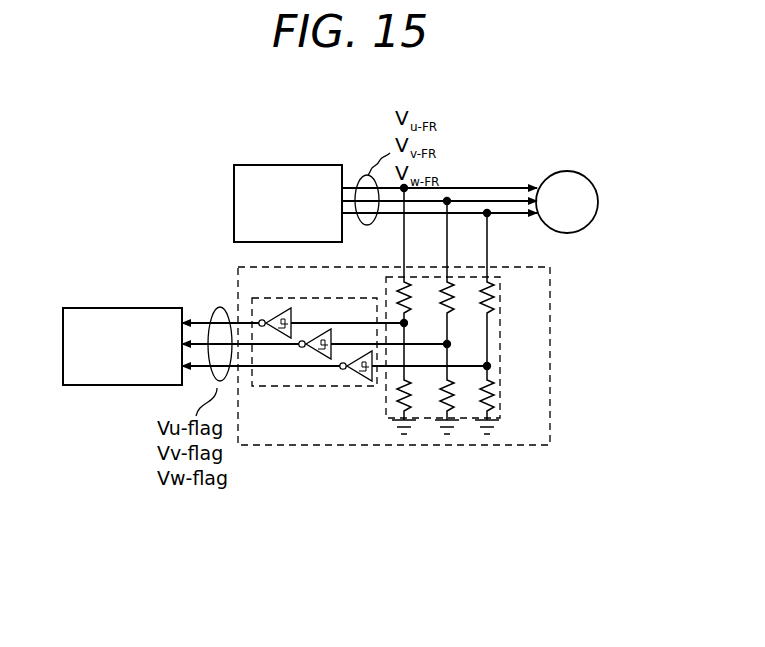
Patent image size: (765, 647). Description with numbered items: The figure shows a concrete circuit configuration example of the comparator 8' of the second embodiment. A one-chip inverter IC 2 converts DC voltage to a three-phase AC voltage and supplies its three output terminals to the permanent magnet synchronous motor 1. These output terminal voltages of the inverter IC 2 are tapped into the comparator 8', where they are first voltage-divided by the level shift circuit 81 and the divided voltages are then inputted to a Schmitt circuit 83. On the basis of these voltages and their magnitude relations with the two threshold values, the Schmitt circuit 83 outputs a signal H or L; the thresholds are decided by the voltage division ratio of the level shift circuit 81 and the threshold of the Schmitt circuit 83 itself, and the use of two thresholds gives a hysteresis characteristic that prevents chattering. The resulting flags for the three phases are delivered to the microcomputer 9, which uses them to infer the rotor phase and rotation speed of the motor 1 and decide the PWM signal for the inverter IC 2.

The permanent magnet synchronous motor 1 is at (574, 171).
The one-chip inverter IC 2 is at (274, 165).
The microcomputer 9 is at (114, 308).
The comparator 8' is at (413, 356).
The level shift circuit 81 is at (500, 345).
The Schmitt circuit 83 is at (307, 302).